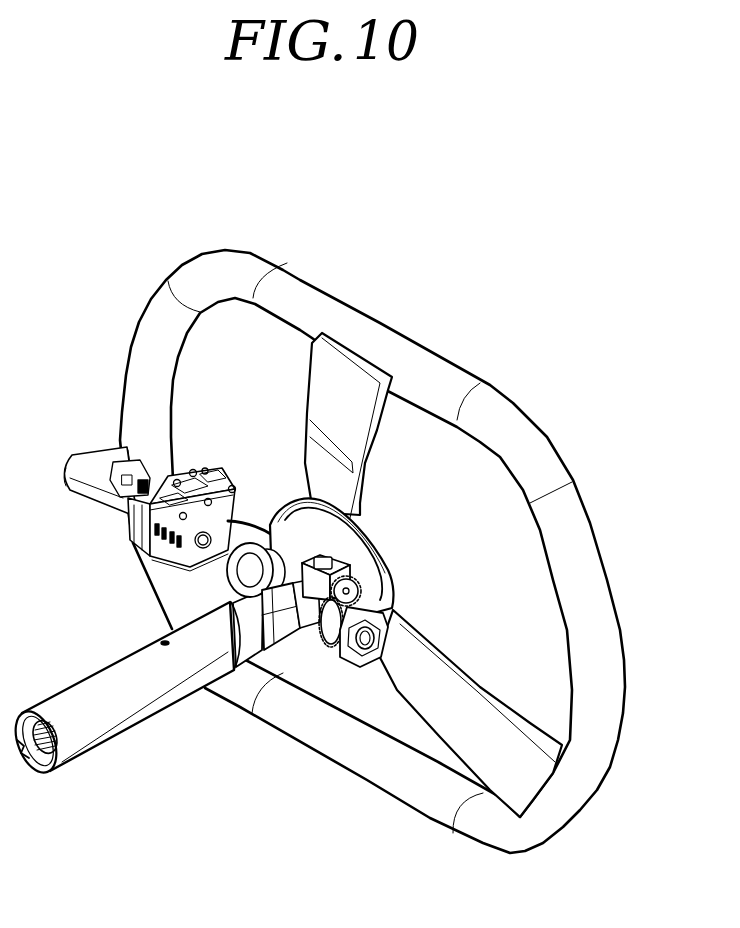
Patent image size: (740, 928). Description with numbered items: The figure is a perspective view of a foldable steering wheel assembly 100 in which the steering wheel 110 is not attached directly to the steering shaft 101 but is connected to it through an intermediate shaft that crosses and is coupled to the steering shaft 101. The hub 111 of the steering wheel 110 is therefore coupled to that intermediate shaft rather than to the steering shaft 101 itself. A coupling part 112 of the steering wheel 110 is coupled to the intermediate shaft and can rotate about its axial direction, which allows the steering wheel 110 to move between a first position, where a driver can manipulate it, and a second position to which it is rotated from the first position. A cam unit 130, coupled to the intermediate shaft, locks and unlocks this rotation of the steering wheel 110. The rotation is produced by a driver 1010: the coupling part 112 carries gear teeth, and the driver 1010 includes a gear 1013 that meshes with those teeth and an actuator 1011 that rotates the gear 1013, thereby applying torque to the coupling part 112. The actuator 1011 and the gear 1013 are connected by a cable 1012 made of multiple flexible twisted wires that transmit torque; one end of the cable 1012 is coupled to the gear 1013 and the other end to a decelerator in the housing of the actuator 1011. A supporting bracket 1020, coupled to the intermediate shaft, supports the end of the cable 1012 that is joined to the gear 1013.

The foldable steering wheel assembly 100 is at (106, 225).
The steering shaft 101 is at (268, 672).
The steering wheel 110 is at (535, 405).
The hub 111 is at (378, 543).
The coupling part 112 is at (243, 522).
The cam unit 130 is at (367, 667).
The driver 1010 is at (153, 523).
The actuator 1011 is at (158, 518).
The cable 1012 is at (233, 572).
The gear 1013 is at (313, 615).
The supporting bracket 1020 is at (298, 600).